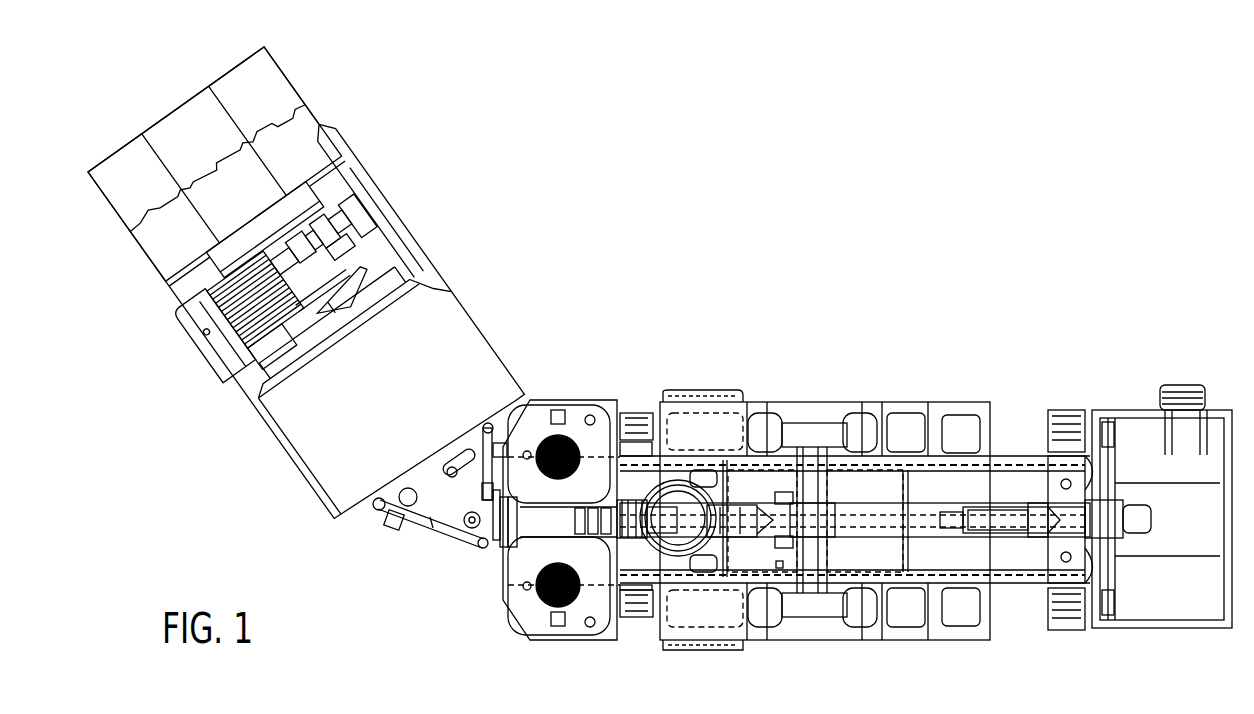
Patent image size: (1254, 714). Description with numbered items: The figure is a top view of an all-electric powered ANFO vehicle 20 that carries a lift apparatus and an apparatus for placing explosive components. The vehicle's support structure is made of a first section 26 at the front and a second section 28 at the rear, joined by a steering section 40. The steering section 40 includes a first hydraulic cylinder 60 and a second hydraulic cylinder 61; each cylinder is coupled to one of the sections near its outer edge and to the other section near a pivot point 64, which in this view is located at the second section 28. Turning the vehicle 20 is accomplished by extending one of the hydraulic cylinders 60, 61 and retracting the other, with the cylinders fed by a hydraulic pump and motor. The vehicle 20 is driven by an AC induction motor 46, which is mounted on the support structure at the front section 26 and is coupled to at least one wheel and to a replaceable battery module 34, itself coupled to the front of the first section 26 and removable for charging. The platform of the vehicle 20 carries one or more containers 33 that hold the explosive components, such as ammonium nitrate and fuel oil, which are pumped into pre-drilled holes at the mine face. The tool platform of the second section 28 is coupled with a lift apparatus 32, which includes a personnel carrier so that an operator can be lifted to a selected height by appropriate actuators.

The all-electric powered ANFO vehicle 20 is at (820, 141).
The first section 26 is at (442, 250).
The second section 28 is at (802, 393).
The lift apparatus 32 is at (1010, 516).
The container 33 is at (561, 410).
The battery module 34 is at (302, 83).
The steering section 40 is at (450, 556).
The AC induction motor 46 is at (216, 350).
The first hydraulic cylinder 60 is at (380, 510).
The second hydraulic cylinder 61 is at (489, 418).
The pivot point 64 is at (478, 535).